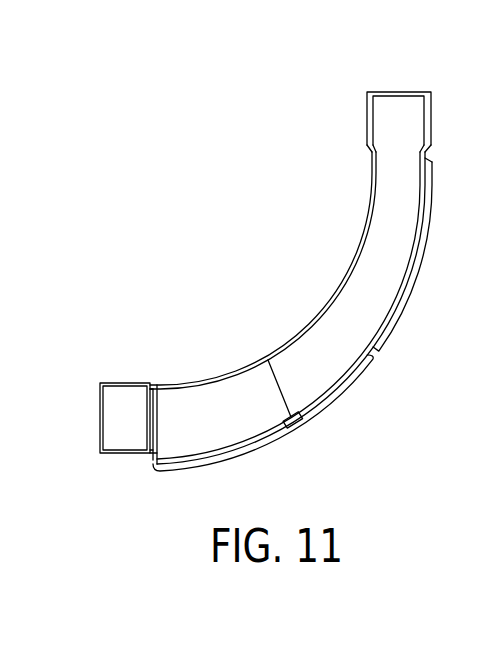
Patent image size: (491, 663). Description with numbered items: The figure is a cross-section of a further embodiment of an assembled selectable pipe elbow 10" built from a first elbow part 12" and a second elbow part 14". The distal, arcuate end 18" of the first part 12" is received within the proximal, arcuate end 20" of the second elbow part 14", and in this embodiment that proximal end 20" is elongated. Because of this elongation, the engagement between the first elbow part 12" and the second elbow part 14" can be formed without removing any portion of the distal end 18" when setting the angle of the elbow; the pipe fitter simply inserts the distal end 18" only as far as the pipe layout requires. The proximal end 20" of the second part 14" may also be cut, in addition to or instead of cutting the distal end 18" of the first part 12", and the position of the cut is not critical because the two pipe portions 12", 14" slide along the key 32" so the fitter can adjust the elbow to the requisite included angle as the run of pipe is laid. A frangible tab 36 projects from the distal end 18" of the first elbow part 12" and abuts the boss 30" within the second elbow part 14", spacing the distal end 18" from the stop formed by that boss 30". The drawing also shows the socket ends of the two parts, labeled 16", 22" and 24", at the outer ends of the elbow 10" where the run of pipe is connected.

The elbow 10 is at (268, 224).
The first elbow part 12 is at (412, 273).
The second elbow part 14 is at (198, 378).
The upper end neck 16 is at (430, 117).
The distal arcuate end 18 is at (338, 393).
The proximal arcuate end 20 is at (322, 308).
The lower socket 22 is at (103, 460).
The upper socket 24 is at (398, 106).
The boss 30 is at (150, 466).
The key 32 is at (392, 323).
The frangible tab 36 is at (284, 421).